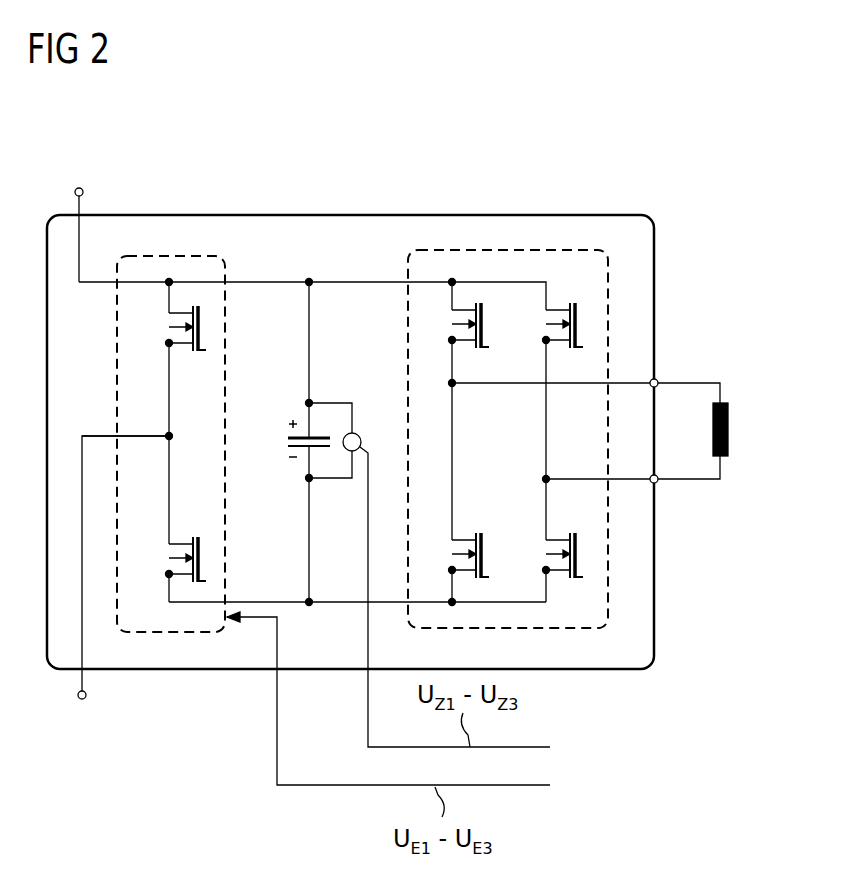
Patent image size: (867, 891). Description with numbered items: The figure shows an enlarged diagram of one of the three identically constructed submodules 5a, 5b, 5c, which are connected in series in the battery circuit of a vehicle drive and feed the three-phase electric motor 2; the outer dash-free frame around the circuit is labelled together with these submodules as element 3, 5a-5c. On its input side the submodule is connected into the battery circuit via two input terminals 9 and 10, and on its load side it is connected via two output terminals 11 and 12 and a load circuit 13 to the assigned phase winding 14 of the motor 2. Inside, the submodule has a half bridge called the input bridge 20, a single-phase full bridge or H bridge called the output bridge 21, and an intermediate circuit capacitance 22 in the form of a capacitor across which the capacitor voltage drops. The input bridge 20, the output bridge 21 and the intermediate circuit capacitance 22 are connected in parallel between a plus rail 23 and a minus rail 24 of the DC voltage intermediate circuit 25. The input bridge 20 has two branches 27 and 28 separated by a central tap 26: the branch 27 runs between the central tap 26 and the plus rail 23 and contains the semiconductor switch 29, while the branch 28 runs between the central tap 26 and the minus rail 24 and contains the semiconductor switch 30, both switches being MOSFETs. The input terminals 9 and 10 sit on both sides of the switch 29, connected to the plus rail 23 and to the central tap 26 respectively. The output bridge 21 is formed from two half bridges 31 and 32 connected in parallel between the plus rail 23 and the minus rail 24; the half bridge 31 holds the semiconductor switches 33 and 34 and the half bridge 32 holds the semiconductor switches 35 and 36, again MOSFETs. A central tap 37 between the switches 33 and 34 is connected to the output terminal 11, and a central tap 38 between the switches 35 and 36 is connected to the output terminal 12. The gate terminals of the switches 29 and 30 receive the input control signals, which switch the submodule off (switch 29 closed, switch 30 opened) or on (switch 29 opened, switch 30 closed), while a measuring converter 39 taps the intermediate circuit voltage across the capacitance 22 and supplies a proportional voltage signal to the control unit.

The electric motor 2 is at (766, 429).
The phase winding 14 is at (728, 427).
The power converter 3 is at (350, 401).
The submodule 5a is at (350, 401).
The submodule 5b is at (350, 401).
The submodule 5c is at (363, 215).
The input terminal 9 is at (79, 188).
The input terminal 10 is at (83, 699).
The output terminal 11 is at (657, 379).
The output terminal 12 is at (657, 482).
The load circuit 13 is at (722, 468).
The input bridge 20 is at (172, 256).
The output bridge 21 is at (537, 250).
The intermediate circuit capacitance 22 is at (318, 452).
The plus rail 23 is at (312, 241).
The minus rail 24 is at (337, 605).
The intermediate circuit 25 is at (260, 282).
The central tap 26 is at (173, 438).
The branch 27 is at (171, 385).
The branch 28 is at (172, 500).
The semiconductor switch 29 is at (201, 322).
The semiconductor switch 30 is at (203, 552).
The half bridge 31 is at (449, 240).
The half bridge 32 is at (572, 268).
The semiconductor switch 33 is at (486, 327).
The semiconductor switch 34 is at (486, 553).
The semiconductor switch 35 is at (578, 317).
The semiconductor switch 36 is at (580, 562).
The central tap 37 is at (458, 390).
The central tap 38 is at (543, 479).
The measuring converter 39 is at (357, 433).